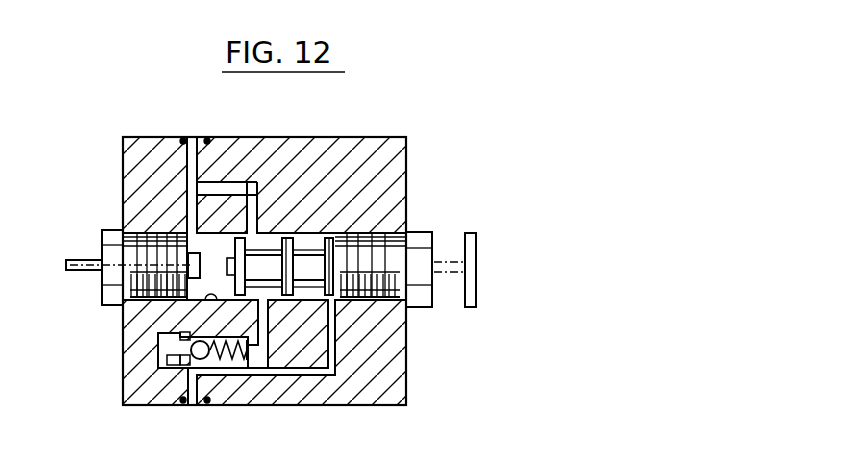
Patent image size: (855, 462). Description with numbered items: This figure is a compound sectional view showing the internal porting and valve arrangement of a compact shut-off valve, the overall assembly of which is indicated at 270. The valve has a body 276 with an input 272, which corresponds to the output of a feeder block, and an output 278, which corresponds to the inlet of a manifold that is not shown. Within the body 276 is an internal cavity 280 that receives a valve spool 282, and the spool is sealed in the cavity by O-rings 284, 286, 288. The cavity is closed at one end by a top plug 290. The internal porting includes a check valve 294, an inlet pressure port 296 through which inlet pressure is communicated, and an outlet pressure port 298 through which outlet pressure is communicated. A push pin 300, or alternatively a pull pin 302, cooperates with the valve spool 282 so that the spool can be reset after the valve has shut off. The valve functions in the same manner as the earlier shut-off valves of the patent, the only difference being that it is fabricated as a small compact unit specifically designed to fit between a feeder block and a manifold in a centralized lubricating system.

The valve body 270 is at (406, 137).
The input 272 is at (193, 397).
The body 276 is at (368, 150).
The output 278 is at (200, 137).
The internal cavity 280 is at (205, 300).
The valve spool 282 is at (305, 250).
The O-ring 284 is at (262, 248).
The O-ring 286 is at (340, 245).
The O-ring 288 is at (378, 200).
The top plug 290 is at (102, 232).
The check valve 294 is at (193, 334).
The inlet pressure port 296 is at (335, 351).
The outlet pressure port 298 is at (186, 193).
The push pin 300 is at (66, 265).
The pull pin 302 is at (478, 235).